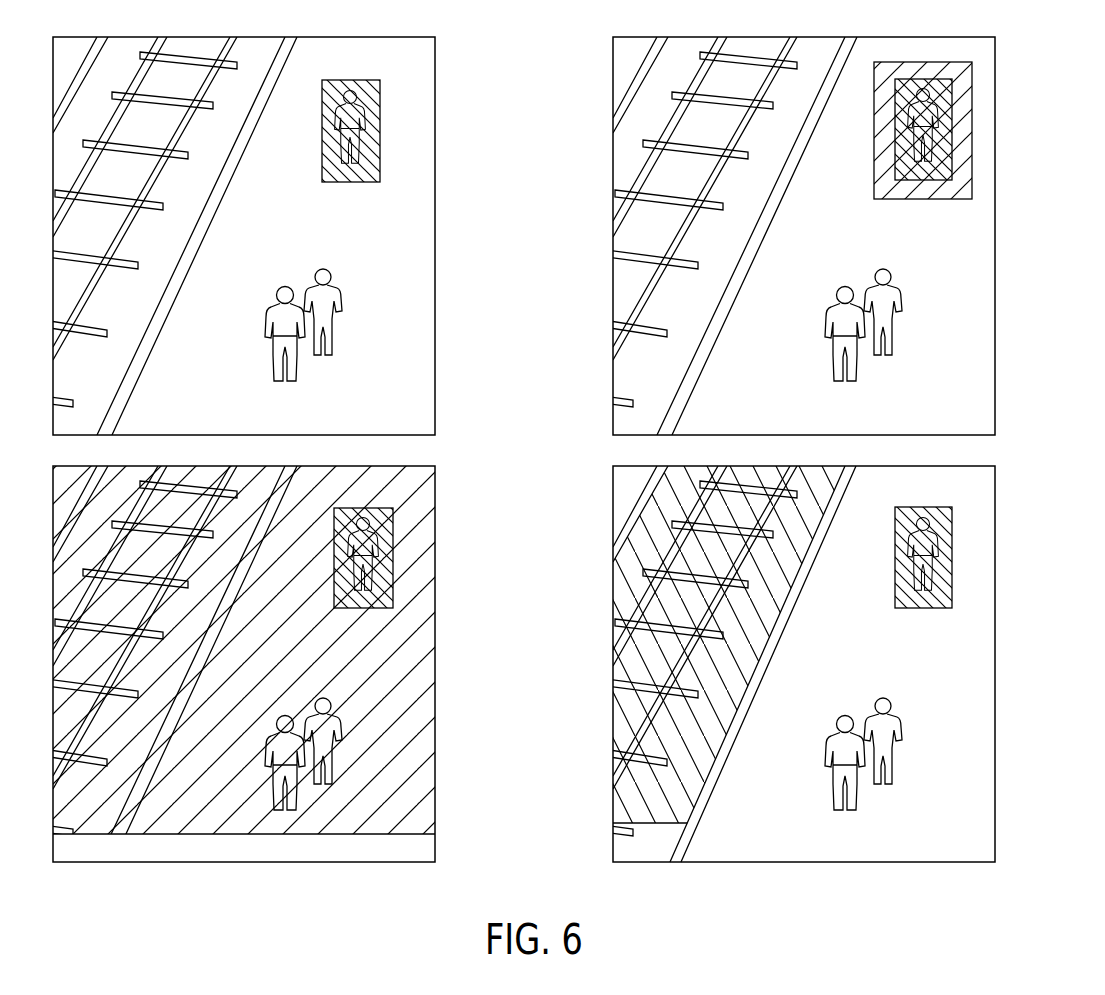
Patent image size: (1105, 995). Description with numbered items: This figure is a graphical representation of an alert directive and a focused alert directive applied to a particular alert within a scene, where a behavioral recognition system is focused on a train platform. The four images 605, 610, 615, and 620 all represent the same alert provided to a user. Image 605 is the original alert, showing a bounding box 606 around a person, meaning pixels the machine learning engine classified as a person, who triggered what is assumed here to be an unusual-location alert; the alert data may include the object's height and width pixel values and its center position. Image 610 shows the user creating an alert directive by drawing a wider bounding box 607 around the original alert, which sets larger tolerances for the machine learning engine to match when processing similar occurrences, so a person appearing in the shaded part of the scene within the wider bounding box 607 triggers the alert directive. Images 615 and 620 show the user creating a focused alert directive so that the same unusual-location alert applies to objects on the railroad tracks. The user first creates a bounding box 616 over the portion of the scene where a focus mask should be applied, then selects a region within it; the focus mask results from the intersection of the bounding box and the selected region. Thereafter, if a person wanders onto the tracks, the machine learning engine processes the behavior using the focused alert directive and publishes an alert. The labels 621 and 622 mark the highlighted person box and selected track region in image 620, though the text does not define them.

The image 605 is at (435, 237).
The bounding box 606 is at (370, 79).
The wider bounding box 607 is at (947, 199).
The image 610 is at (995, 310).
The image 615 is at (435, 538).
The bounding box 616 is at (263, 834).
The image 620 is at (995, 539).
The bounding box of detected person 621 is at (943, 608).
The hatched track region 622 is at (643, 823).